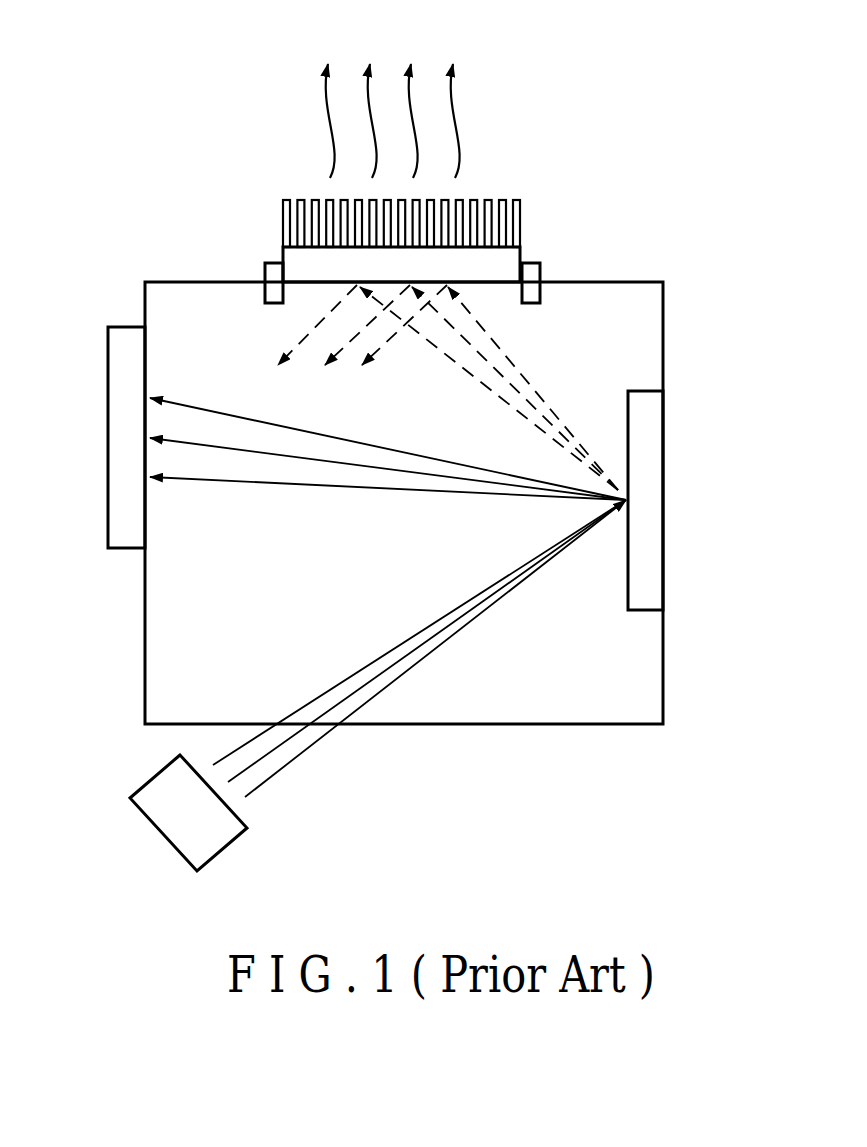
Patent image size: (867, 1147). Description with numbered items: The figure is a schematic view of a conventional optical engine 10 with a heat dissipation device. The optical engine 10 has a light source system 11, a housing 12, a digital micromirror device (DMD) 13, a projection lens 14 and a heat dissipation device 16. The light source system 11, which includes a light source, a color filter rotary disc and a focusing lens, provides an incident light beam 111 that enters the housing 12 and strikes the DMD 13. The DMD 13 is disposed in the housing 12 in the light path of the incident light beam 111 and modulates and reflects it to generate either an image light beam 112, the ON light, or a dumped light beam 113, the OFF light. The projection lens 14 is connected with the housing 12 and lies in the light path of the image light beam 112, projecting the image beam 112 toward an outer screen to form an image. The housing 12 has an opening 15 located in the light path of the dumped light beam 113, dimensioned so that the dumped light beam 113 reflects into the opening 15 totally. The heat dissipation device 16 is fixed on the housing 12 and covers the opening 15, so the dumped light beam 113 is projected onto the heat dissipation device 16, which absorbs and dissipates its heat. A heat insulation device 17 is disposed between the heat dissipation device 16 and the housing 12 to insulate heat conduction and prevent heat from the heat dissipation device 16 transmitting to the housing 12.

The optical engine 10 is at (639, 156).
The light source system 11 is at (168, 818).
The housing 12 is at (665, 664).
The digital micromirror device (DMD) 13 is at (648, 453).
The projection lens 14 is at (120, 427).
The opening 15 is at (315, 303).
The heat dissipation device 16 is at (507, 258).
The heat insulation device 17 is at (540, 270).
The incident light beam 111 is at (390, 648).
The image light beam 112 is at (272, 487).
The dumped light beam 113 is at (520, 375).